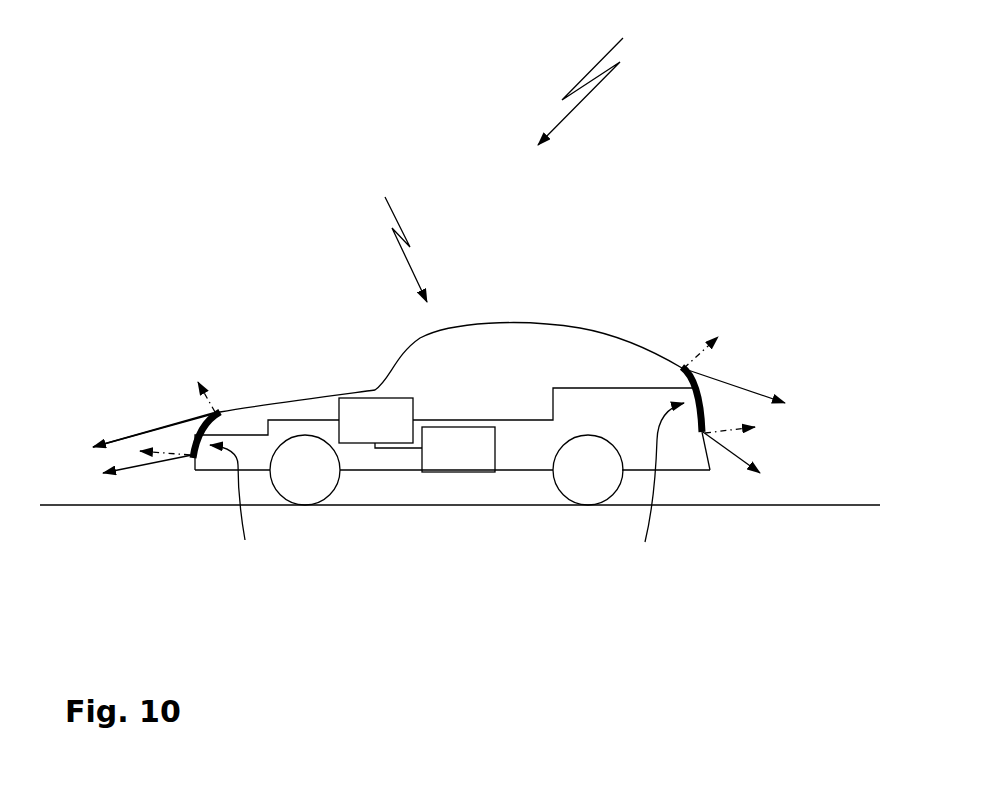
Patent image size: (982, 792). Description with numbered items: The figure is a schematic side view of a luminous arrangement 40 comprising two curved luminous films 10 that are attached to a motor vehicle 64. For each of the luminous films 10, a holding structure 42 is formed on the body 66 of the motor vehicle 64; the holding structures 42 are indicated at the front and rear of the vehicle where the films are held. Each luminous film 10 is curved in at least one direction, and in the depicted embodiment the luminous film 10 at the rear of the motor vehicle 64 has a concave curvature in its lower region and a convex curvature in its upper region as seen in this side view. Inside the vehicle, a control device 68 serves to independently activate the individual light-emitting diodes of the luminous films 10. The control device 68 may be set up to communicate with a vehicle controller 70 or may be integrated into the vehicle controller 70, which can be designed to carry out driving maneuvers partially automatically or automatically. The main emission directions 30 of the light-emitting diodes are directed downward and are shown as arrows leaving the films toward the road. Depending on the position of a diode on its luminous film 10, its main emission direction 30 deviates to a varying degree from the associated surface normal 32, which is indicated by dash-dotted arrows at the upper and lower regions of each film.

The luminous film 10 is at (196, 424).
The main emission direction 30 is at (127, 437).
The surface normal 32 is at (207, 398).
The luminous arrangement 40 is at (592, 79).
The holding structure 42 is at (447, 489).
The motor vehicle 64 is at (399, 237).
The body 66 is at (322, 393).
The control device 68 is at (380, 423).
The vehicle controller 70 is at (458, 449).